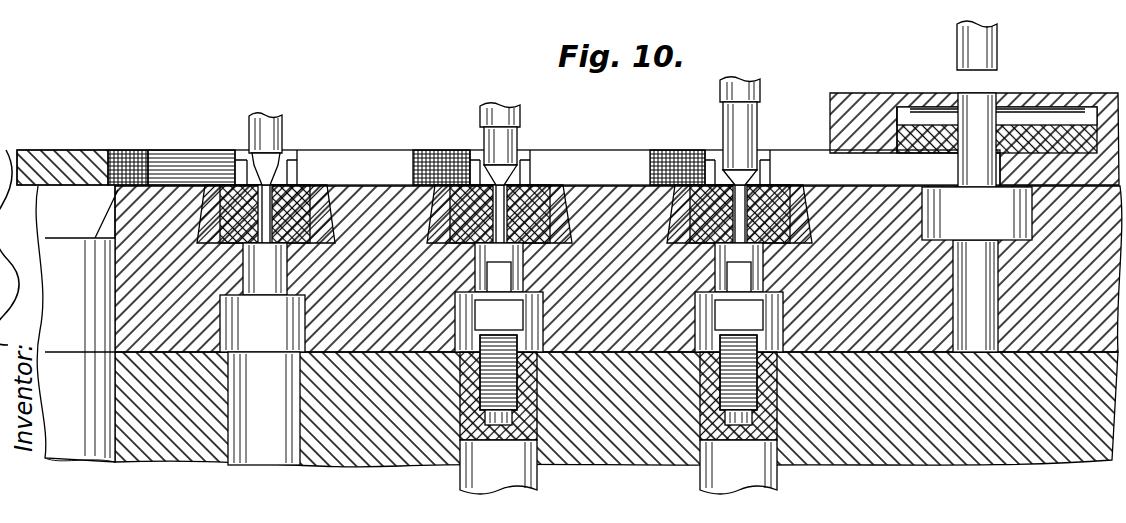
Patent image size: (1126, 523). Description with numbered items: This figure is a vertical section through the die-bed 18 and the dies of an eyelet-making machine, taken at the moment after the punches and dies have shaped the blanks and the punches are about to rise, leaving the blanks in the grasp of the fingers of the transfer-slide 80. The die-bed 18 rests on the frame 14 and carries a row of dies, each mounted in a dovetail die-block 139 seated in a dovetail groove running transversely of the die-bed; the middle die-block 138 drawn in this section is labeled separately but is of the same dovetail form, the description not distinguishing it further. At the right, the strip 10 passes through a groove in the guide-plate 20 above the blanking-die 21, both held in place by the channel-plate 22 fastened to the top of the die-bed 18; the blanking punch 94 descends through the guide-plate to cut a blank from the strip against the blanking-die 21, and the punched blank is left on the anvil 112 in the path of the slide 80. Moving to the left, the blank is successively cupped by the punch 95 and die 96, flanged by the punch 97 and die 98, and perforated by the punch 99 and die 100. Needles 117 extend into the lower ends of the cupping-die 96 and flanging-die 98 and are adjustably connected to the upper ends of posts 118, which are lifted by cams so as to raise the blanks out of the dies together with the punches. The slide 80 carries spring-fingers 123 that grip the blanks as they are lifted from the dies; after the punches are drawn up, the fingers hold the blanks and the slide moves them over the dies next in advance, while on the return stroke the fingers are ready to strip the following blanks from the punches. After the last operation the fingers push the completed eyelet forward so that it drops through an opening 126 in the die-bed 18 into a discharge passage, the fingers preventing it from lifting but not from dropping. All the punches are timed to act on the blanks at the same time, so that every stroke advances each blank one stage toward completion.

The strip 10 is at (1062, 117).
The frame 14 is at (616, 409).
The die-bed 18 is at (618, 269).
The guide-plate 20 is at (901, 106).
The blanking-die 21 is at (897, 130).
The channel-plate 22 is at (846, 94).
The transfer-slide 80 is at (626, 149).
The blanking punch 94 is at (997, 52).
The cupping punch 95 is at (745, 176).
The cupping-die 96 is at (706, 186).
The flanging punch 97 is at (506, 172).
The flanging-die 98 is at (464, 186).
The perforating punch 99 is at (267, 172).
The perforating-die 100 is at (243, 183).
The anvil 112 is at (977, 213).
The needle 117 is at (478, 236).
The post 118 is at (472, 384).
The spring-finger 123 is at (302, 168).
The opening 126 is at (77, 324).
The die insert 138 is at (430, 226).
The die-block 139 is at (200, 246).